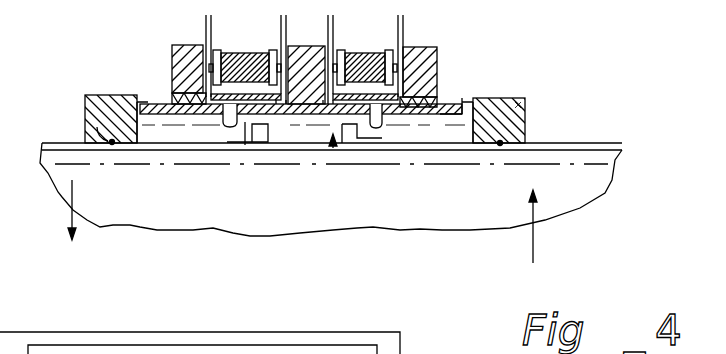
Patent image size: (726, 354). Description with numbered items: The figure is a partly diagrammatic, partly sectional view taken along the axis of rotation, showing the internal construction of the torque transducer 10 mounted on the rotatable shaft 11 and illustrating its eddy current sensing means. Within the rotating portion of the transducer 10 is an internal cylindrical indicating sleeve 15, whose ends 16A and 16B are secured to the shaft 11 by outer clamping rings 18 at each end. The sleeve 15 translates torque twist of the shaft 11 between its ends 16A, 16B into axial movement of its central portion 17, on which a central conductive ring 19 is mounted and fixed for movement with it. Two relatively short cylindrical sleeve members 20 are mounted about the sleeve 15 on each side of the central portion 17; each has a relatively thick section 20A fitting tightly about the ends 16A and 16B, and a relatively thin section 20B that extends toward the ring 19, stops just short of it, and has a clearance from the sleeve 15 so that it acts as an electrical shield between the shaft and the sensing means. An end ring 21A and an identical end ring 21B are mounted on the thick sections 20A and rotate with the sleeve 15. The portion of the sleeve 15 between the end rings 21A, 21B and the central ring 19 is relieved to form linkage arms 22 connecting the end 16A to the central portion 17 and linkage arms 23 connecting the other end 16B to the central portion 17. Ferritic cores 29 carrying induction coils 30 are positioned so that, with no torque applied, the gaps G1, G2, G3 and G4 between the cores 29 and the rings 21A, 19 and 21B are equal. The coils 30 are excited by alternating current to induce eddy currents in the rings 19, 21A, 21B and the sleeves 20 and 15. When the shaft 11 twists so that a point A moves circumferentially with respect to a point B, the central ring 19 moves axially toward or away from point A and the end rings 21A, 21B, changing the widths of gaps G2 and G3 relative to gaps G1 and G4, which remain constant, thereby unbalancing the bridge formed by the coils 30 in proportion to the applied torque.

The torque transducer 10 is at (593, 128).
The rotatable shaft 11 is at (142, 219).
The indicating sleeve 15 is at (333, 150).
The end of sleeve 16A is at (166, 108).
The end of sleeve 16B is at (439, 112).
The central portion 17 is at (306, 128).
The outer clamping ring 18 is at (84, 102).
The central conductive ring 19 is at (317, 50).
The cylindrical sleeve member 20 is at (216, 101).
The thick section 20A is at (178, 92).
The thin section 20B is at (328, 101).
The end ring 21A is at (183, 44).
The end ring 21B is at (423, 47).
The linkage arm 22 is at (250, 128).
The linkage arm 23 is at (363, 132).
The ferritic core 29 is at (212, 68).
The induction coil 30 is at (248, 53).
The point A is at (108, 141).
The point B is at (500, 143).
The gap G1 is at (214, 25).
The gap G2 is at (275, 25).
The gap G3 is at (325, 25).
The gap G4 is at (347, 25).